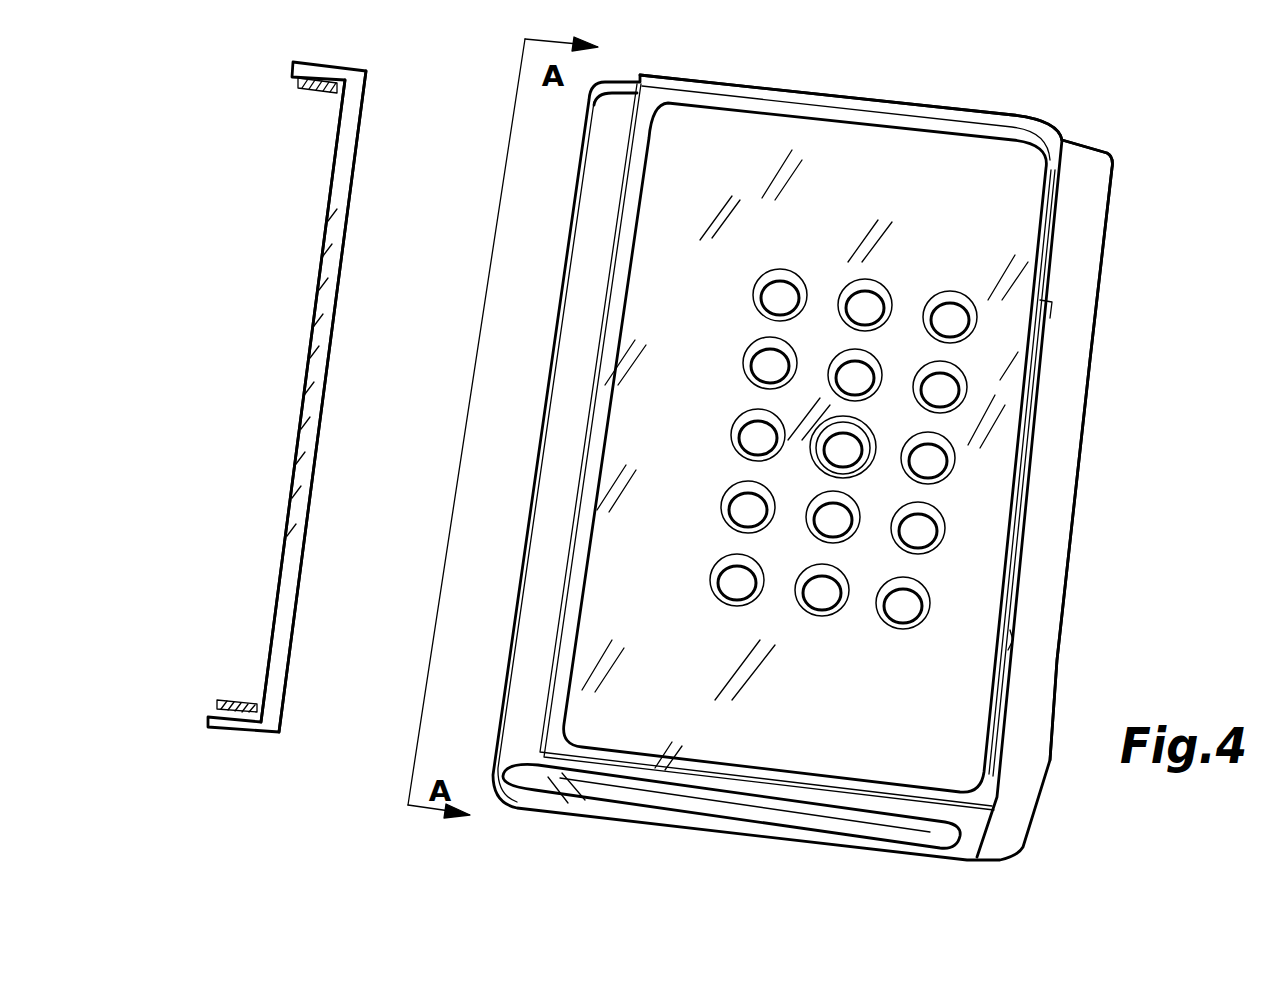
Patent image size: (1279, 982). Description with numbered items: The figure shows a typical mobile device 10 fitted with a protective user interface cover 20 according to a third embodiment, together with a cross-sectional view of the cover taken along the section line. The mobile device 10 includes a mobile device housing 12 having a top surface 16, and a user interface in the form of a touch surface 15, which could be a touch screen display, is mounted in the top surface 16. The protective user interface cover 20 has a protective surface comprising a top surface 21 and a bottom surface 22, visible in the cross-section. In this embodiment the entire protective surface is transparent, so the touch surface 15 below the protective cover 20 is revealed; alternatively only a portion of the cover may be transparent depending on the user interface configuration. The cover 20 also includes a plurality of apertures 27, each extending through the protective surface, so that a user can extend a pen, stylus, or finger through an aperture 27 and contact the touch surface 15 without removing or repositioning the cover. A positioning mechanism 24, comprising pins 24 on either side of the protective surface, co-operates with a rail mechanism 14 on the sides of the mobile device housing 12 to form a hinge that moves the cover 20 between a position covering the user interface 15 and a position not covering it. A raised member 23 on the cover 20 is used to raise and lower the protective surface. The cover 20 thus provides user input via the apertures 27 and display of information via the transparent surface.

The mobile device 10 is at (1163, 284).
The mobile device housing 12 is at (1050, 760).
The rail mechanism 14 is at (848, 97).
The touch surface 15 is at (705, 447).
The top surface 16 is at (1077, 323).
The protective user interface cover 20 is at (360, 136).
The top surface 21 is at (307, 397).
The bottom surface 22 is at (312, 485).
The raised member 23 is at (1023, 560).
The positioning mechanism 24 is at (307, 90).
The apertures 27 is at (927, 463).